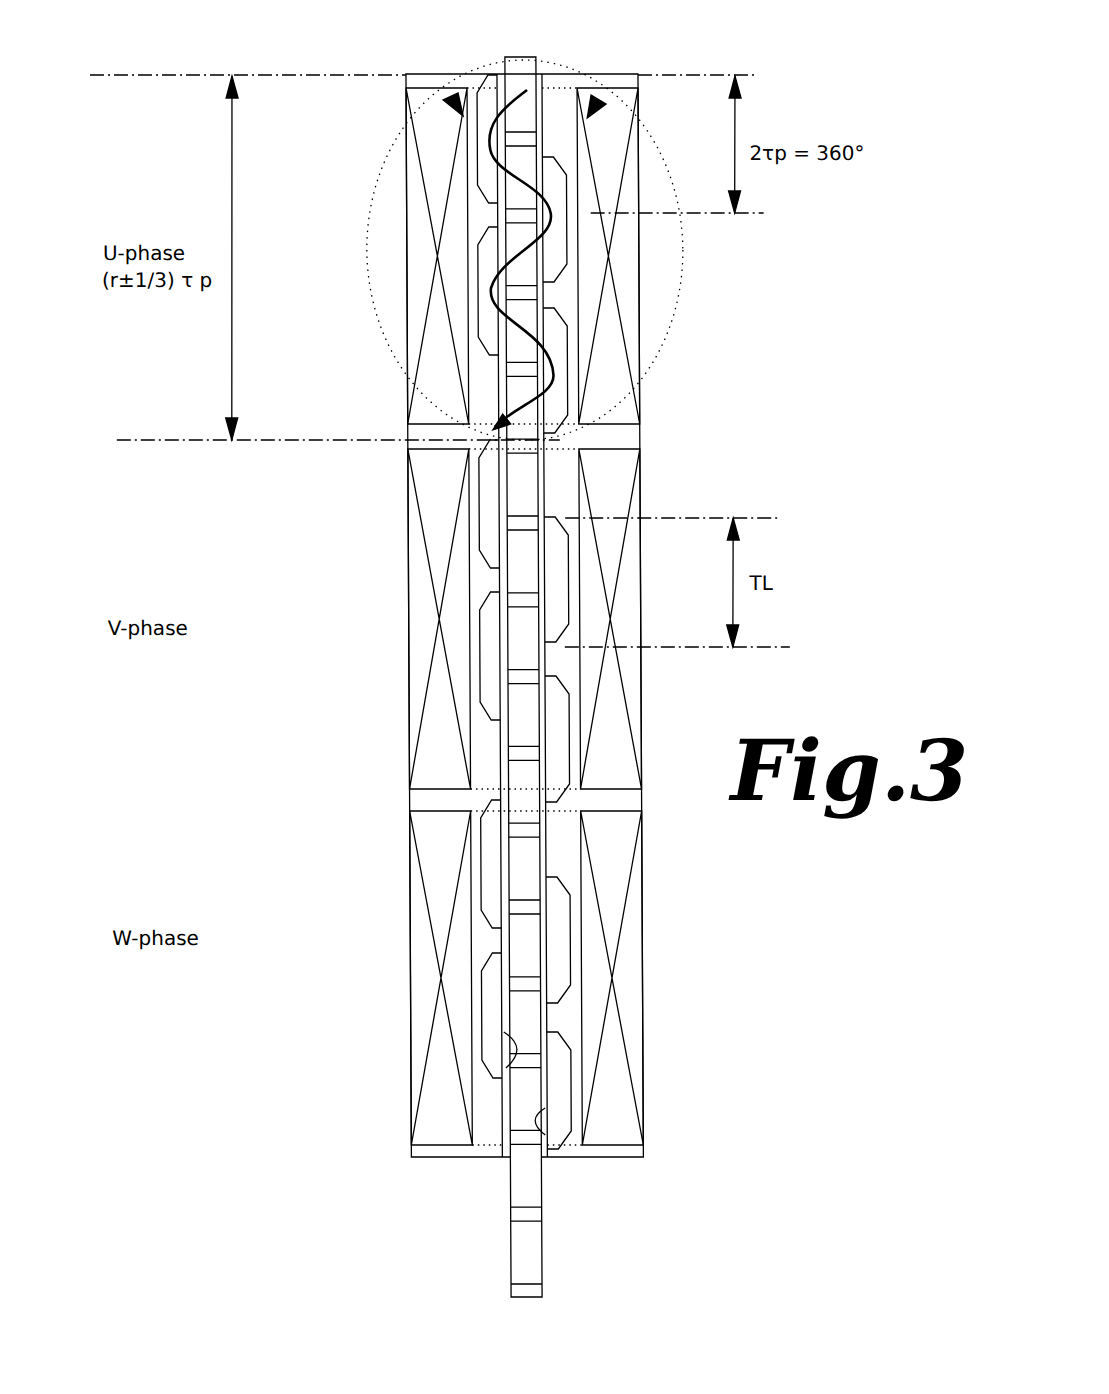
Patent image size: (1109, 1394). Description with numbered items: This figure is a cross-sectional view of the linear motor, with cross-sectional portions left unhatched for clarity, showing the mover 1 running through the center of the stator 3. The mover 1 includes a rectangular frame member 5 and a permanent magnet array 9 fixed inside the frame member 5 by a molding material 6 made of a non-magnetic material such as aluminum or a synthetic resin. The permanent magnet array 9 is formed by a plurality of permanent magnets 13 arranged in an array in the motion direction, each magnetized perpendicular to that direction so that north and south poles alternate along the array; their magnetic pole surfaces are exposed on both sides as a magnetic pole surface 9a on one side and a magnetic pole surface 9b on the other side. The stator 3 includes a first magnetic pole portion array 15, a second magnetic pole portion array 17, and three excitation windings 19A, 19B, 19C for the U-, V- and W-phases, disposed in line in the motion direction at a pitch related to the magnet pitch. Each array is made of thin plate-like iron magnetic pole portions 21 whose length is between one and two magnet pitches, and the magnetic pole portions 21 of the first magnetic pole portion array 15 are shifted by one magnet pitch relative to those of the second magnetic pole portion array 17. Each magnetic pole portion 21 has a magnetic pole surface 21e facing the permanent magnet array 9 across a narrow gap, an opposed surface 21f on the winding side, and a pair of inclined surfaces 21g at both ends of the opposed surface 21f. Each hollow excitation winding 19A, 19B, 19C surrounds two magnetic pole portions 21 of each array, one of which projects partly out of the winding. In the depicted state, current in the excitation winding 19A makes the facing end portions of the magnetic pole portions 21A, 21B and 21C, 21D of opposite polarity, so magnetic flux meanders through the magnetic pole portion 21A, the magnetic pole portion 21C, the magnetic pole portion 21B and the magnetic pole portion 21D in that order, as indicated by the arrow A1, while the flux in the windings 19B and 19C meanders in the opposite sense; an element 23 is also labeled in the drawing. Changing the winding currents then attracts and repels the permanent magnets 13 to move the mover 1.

The mover 1 is at (554, 51).
The stator 3 is at (391, 129).
The frame member 5 is at (520, 57).
The molding material 6 is at (523, 142).
The permanent magnet array 9 is at (502, 120).
The magnetic pole surface 9a is at (489, 970).
The magnetic pole surface 9b is at (544, 1039).
The permanent magnet 13 is at (521, 122).
The first magnetic pole portion array 15 is at (453, 315).
The second magnetic pole portion array 17 is at (577, 371).
The excitation winding 19A is at (395, 197).
The excitation winding 19B is at (393, 594).
The excitation winding 19C is at (405, 937).
The magnetic pole portion 21 is at (533, 588).
The magnetic pole portion 21A is at (460, 123).
The magnetic pole portion 21B is at (479, 283).
The magnetic pole portion 21C is at (551, 175).
The magnetic pole portion 21D is at (551, 335).
The magnetic pole surface 21e is at (502, 1083).
The opposed surface 21f is at (477, 1033).
The inclined surface 21g is at (495, 967).
The back yoke 23 is at (560, 490).
The arrow A1 is at (487, 282).